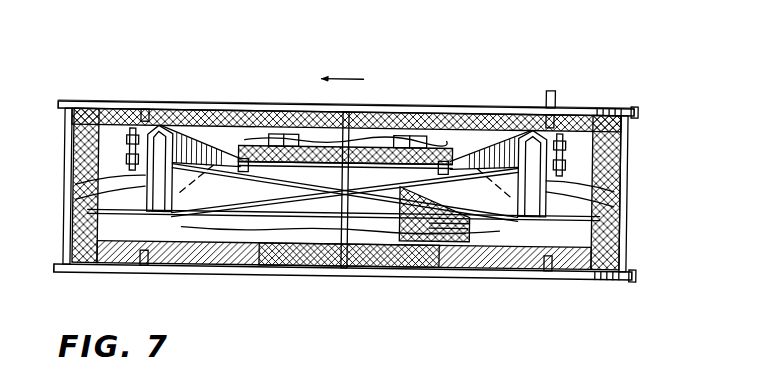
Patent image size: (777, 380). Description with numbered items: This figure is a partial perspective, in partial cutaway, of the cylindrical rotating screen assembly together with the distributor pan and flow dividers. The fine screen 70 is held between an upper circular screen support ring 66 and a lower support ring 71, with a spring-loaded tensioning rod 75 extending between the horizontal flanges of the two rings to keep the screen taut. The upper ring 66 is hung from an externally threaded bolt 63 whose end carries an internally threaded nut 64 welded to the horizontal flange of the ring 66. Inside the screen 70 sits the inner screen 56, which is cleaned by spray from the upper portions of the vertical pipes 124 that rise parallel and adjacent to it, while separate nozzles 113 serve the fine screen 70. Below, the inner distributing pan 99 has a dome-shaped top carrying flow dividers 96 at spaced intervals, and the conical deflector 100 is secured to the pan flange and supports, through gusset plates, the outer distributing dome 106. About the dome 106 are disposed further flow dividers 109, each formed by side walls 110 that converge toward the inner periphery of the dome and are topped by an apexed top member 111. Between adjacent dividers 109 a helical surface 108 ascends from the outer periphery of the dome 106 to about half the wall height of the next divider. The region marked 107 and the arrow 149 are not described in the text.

The inner screen 56 is at (309, 147).
The externally threaded bolt 63 is at (553, 88).
The internally threaded nut 64 is at (562, 106).
The upper circular screen support ring 66 is at (613, 106).
The fine screen 70 is at (604, 142).
The lower support ring 71 is at (576, 282).
The spring-loaded tensioning rod 75 is at (62, 227).
The flow divider 96 is at (281, 139).
The inner distributing pan 99 is at (380, 139).
The conical deflector 100 is at (186, 229).
The outer distributing dome 106 is at (305, 208).
The chamber 107 is at (345, 181).
The helical surface 108 is at (97, 190).
The flow divider 109 is at (187, 122).
The side walls 110 is at (160, 206).
The apexed top member 111 is at (208, 135).
The nozzles 113 is at (126, 162).
The vertical pipes 124 is at (442, 158).
The flow direction arrow 149 is at (349, 76).